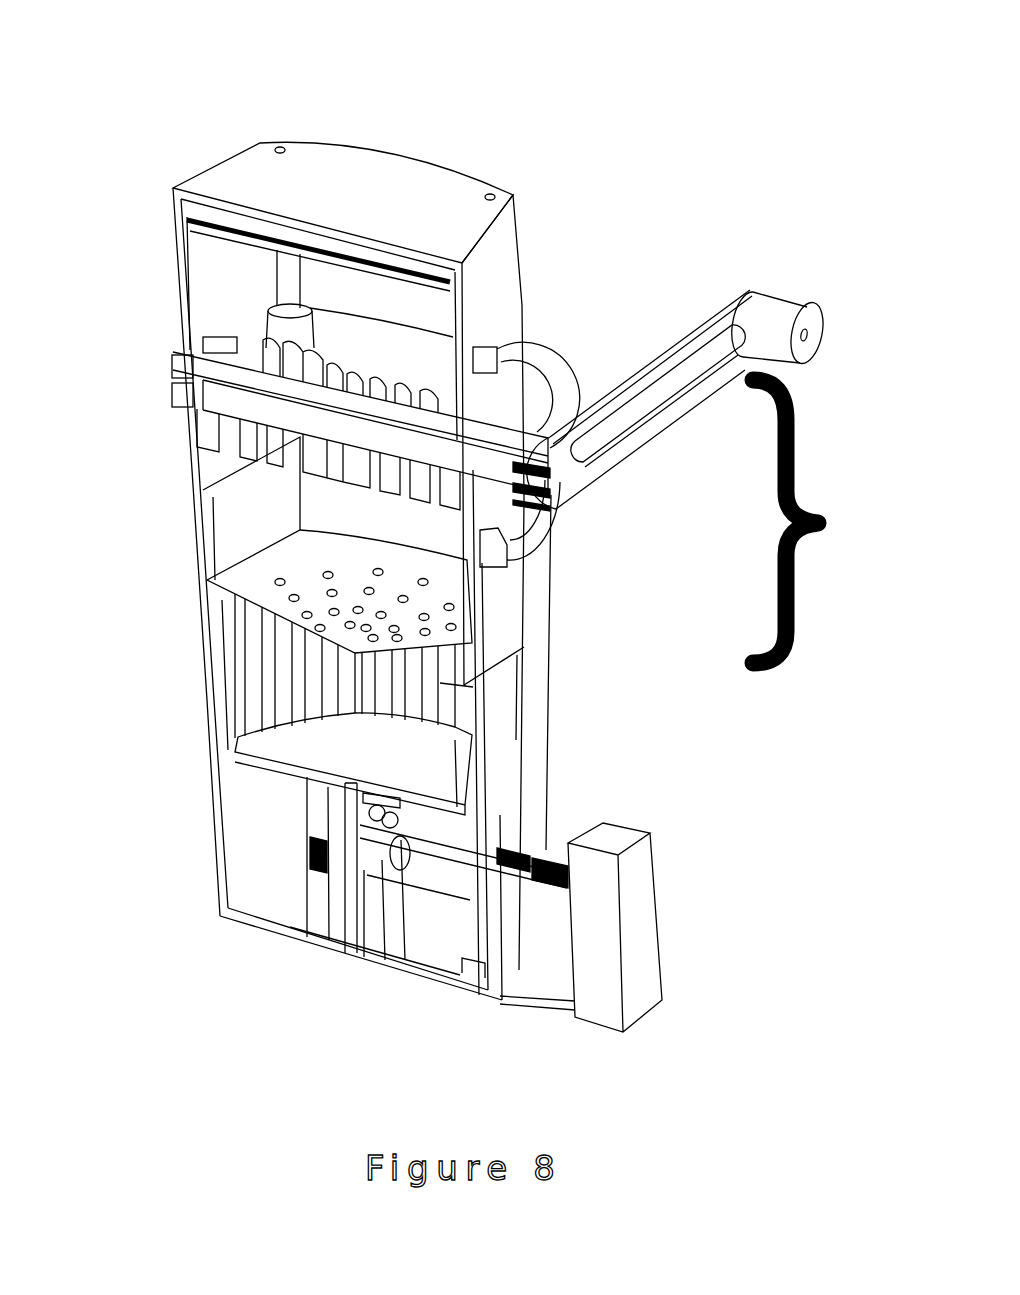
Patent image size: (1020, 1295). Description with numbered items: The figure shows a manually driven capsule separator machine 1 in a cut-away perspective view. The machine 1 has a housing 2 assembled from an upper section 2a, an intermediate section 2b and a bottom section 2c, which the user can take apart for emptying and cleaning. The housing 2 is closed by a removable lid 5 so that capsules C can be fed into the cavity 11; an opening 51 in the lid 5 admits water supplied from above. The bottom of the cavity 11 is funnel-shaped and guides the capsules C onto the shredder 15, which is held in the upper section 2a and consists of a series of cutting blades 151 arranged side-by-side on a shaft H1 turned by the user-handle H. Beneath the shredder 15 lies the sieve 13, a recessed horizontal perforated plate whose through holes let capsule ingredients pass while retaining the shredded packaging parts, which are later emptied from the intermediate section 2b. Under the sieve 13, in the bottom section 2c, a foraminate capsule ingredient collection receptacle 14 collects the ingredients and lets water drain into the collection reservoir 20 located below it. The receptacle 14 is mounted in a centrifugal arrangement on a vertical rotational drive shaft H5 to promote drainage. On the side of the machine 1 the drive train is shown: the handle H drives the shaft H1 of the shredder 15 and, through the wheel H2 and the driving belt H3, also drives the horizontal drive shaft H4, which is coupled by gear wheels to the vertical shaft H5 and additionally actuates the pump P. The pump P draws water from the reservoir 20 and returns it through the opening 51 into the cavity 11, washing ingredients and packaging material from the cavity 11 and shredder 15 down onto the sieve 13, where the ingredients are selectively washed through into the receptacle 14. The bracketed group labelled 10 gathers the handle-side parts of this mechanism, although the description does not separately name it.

The machine 1 is at (193, 84).
The housing 2 is at (505, 280).
The upper section 2a is at (182, 313).
The intermediate section 2b is at (196, 527).
The bottom section 2c is at (205, 708).
The lid 5 is at (465, 187).
The opening 51 is at (315, 212).
The cavity 11 is at (371, 294).
The capsules C is at (275, 330).
The shredder 15 is at (359, 380).
The cutting blades 151 is at (320, 462).
The sieve 13 is at (294, 572).
The capsule ingredient collection receptacle 14 is at (298, 746).
The collection reservoir 20 is at (281, 902).
The drive mechanism 10 is at (812, 521).
The user-handle H is at (752, 266).
The shaft H1 is at (187, 420).
The wheel H2 is at (546, 372).
The driving belt H3 is at (560, 546).
The horizontal drive shaft H4 is at (458, 860).
The vertical rotational drive shaft H5 is at (352, 930).
The pump P is at (607, 838).